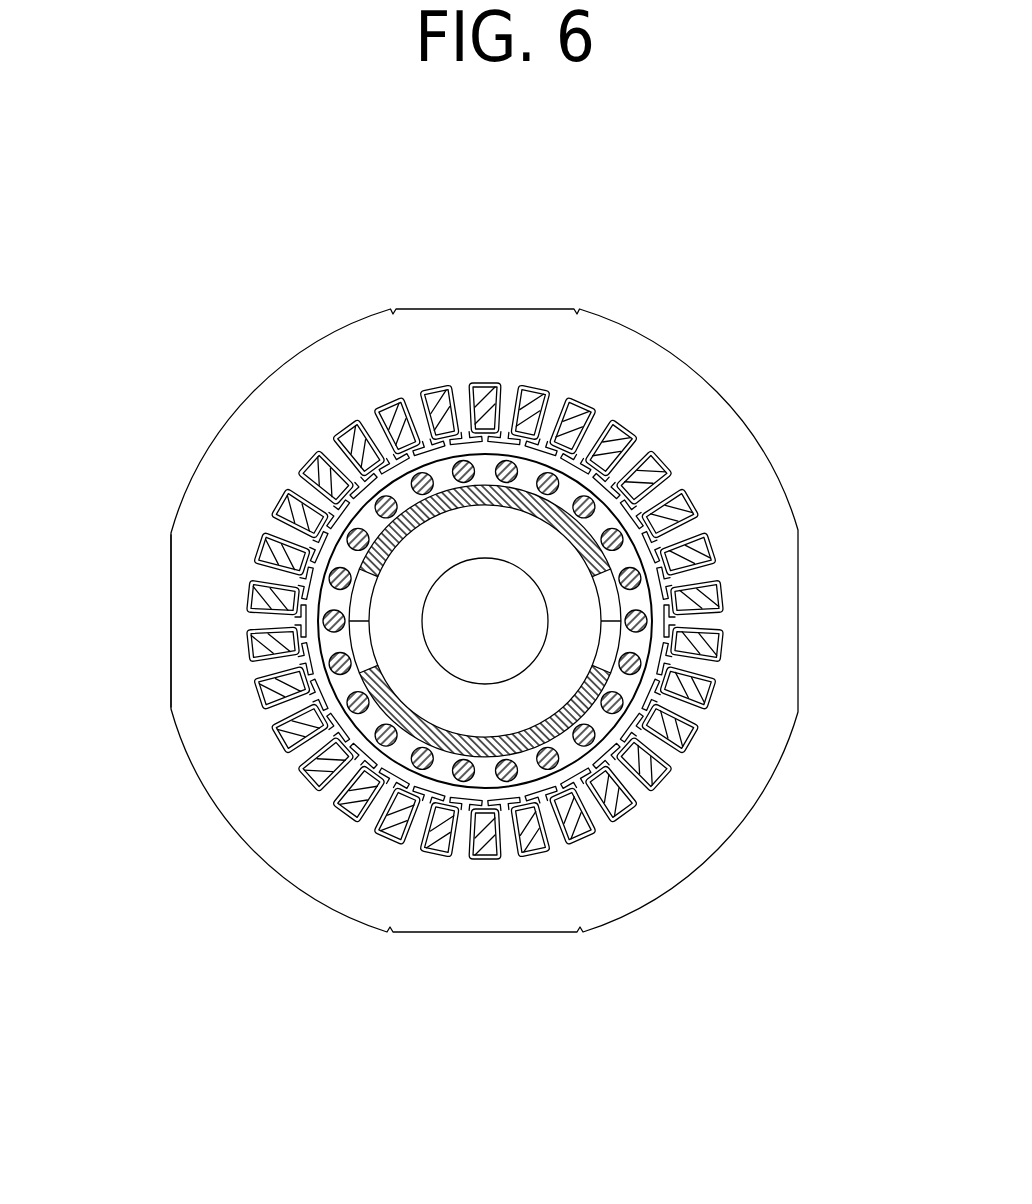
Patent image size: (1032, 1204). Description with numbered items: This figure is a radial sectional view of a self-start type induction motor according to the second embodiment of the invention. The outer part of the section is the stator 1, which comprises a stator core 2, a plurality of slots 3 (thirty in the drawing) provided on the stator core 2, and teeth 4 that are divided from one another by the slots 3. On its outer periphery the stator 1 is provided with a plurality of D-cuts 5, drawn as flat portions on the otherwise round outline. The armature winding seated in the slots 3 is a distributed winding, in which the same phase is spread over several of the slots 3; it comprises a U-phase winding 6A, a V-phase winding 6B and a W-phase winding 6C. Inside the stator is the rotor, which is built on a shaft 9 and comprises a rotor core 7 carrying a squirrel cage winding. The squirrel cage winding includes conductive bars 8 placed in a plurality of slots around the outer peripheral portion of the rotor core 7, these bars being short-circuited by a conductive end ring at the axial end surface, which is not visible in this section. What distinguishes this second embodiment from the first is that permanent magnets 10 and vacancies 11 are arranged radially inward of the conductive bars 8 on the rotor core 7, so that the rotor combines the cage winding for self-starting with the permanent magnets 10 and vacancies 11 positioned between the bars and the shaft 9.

The stator 1 is at (687, 360).
The stator core 2 is at (740, 455).
The slots 3 is at (723, 590).
The teeth 4 is at (708, 667).
The D-cuts 5 is at (170, 573).
The U-phase winding 6A is at (382, 411).
The V-phase winding 6B is at (263, 688).
The W-phase winding 6C is at (665, 725).
The rotor core 7 is at (352, 800).
The conductive bars 8 is at (470, 785).
The shaft 9 is at (485, 621).
The permanent magnets 10 is at (562, 706).
The vacancies 11 is at (600, 646).